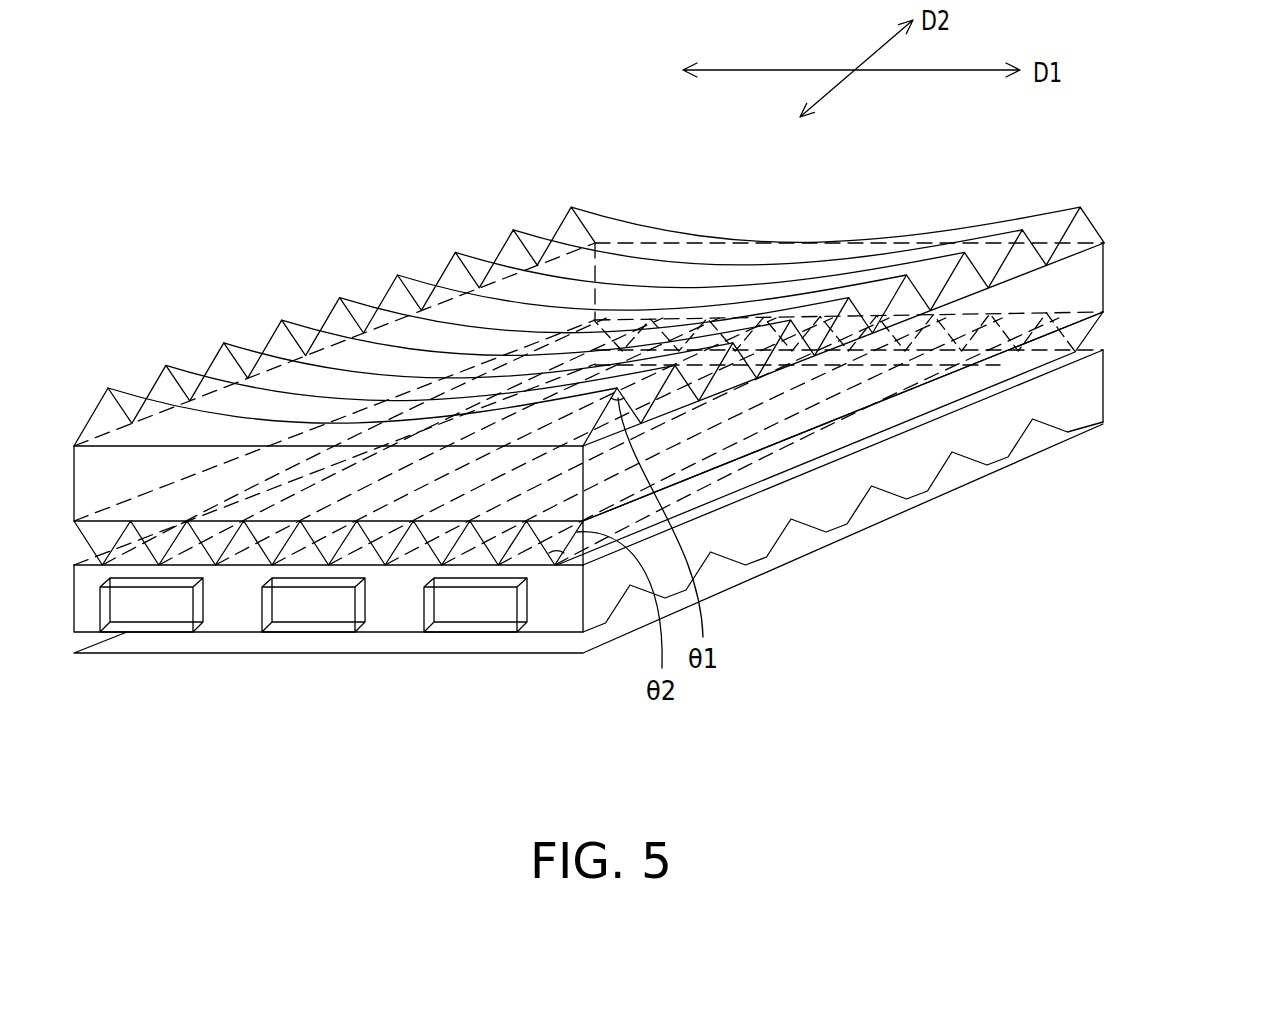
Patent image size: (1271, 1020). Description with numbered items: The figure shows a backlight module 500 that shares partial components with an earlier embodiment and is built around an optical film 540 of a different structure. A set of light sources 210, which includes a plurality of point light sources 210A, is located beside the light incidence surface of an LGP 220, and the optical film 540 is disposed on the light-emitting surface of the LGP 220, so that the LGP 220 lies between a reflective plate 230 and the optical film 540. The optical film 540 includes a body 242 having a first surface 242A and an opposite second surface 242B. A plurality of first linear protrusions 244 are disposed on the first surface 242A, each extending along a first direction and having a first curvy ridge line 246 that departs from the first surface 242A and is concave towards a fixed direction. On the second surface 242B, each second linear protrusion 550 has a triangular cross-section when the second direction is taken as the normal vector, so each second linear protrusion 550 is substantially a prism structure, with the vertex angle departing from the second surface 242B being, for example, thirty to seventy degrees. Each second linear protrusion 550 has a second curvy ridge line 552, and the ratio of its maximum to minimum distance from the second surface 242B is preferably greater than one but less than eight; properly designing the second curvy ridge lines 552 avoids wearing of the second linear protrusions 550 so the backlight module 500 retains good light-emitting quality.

The backlight module 500 is at (661, 453).
The optical film 540 is at (661, 389).
The first linear protrusions 244 is at (629, 283).
The first curvy ridge line 246 is at (609, 216).
The body 242 is at (629, 360).
The first surface 242A is at (961, 292).
The second surface 242B is at (959, 370).
The second linear protrusions 550 is at (629, 473).
The second curvy ridge line 552 is at (731, 472).
The LGP 220 is at (629, 568).
The set of light sources 210 is at (313, 682).
The point light sources 210A is at (428, 735).
The reflective plate 230 is at (1068, 444).